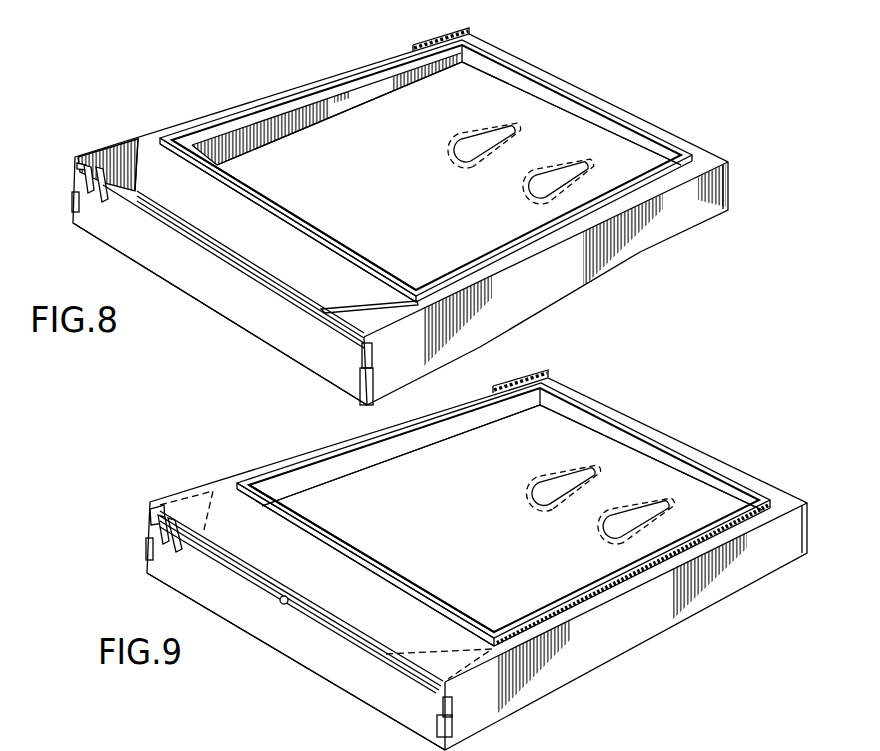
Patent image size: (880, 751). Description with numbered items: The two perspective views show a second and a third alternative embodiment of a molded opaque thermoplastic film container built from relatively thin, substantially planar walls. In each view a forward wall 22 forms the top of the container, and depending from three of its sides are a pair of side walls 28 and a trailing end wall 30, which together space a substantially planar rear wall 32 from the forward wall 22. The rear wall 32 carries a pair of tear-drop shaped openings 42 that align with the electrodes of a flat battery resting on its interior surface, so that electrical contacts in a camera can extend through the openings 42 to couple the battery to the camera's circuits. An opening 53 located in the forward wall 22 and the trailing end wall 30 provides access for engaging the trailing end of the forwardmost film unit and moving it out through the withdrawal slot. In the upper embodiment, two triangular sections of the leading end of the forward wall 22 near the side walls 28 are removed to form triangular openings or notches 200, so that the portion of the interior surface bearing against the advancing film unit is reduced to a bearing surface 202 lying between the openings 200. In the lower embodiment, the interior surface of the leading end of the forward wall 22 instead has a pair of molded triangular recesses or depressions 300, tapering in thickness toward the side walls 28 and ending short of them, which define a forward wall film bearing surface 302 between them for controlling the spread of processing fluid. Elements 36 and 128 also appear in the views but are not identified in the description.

In FIG. 8, the forward wall 22 is at (238, 104).
In FIG. 9, the forward wall 22 is at (477, 564).
In FIG. 8, the side wall 28 is at (311, 123).
In FIG. 9, the side wall 28 is at (437, 447).
In FIG. 8, the trailing end wall 30 is at (573, 121).
In FIG. 9, the trailing end wall 30 is at (658, 467).
In FIG. 8, the rear wall 32 is at (432, 192).
In FIG. 9, the rear wall 32 is at (508, 538).
In FIG. 8, the front wall 36 is at (225, 316).
In FIG. 9, the front wall 36 is at (305, 665).
In FIG. 8, the tear-drop shaped openings 42 is at (482, 135).
In FIG. 9, the tear-drop shaped openings 42 is at (601, 504).
In FIG. 8, the opening 53 is at (472, 29).
In FIG. 9, the opening 53 is at (552, 372).
In FIG. 8, the retaining strip 128 is at (308, 247).
In FIG. 9, the retaining strip 128 is at (392, 591).
In FIG. 8, the triangular openings or notches 200 is at (117, 165).
In FIG. 8, the bearing surface 202 is at (240, 223).
In FIG. 9, the triangular recesses or depressions 300 is at (192, 498).
In FIG. 9, the forward wall film bearing surface 302 is at (283, 597).